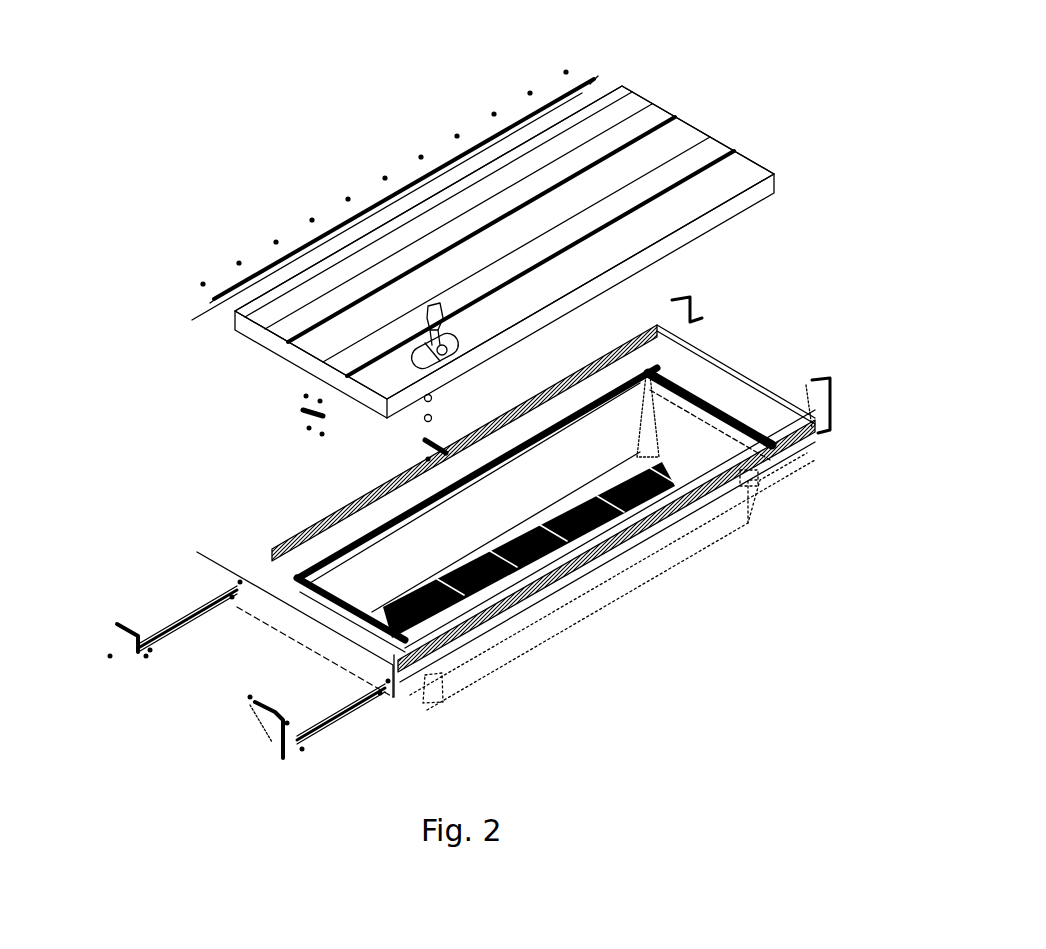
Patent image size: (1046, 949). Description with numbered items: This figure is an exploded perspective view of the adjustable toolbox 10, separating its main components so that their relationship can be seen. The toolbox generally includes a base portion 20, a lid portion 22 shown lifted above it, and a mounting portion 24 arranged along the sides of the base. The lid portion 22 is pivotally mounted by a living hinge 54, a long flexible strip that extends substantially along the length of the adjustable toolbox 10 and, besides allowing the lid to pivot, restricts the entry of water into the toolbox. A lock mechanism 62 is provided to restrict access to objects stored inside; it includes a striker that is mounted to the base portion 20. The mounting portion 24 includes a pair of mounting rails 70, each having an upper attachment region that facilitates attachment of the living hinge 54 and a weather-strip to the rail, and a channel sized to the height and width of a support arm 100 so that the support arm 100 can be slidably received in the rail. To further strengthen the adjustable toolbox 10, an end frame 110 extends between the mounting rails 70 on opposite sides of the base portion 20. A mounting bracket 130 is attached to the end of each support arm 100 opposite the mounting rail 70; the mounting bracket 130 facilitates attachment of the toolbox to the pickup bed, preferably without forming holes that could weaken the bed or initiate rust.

The adjustable toolbox 10 is at (258, 110).
The base portion 20 is at (557, 622).
The lid portion 22 is at (670, 138).
The mounting portion 24 is at (680, 515).
The living hinge 54 is at (218, 306).
The lock mechanism 62 is at (450, 330).
The mounting rail 70 is at (318, 528).
The support arm 100 is at (783, 450).
The end frame 110 is at (302, 647).
The mounting bracket 130 is at (692, 320).